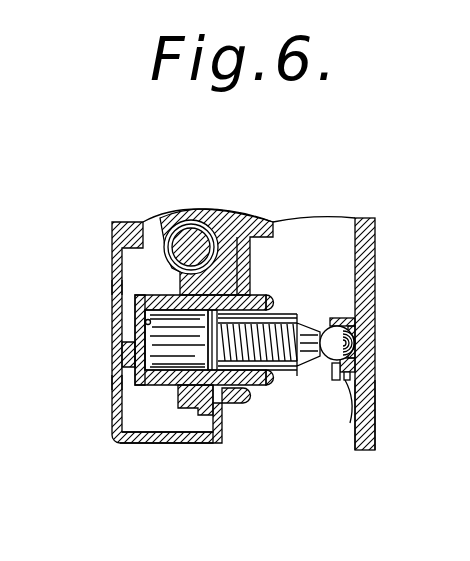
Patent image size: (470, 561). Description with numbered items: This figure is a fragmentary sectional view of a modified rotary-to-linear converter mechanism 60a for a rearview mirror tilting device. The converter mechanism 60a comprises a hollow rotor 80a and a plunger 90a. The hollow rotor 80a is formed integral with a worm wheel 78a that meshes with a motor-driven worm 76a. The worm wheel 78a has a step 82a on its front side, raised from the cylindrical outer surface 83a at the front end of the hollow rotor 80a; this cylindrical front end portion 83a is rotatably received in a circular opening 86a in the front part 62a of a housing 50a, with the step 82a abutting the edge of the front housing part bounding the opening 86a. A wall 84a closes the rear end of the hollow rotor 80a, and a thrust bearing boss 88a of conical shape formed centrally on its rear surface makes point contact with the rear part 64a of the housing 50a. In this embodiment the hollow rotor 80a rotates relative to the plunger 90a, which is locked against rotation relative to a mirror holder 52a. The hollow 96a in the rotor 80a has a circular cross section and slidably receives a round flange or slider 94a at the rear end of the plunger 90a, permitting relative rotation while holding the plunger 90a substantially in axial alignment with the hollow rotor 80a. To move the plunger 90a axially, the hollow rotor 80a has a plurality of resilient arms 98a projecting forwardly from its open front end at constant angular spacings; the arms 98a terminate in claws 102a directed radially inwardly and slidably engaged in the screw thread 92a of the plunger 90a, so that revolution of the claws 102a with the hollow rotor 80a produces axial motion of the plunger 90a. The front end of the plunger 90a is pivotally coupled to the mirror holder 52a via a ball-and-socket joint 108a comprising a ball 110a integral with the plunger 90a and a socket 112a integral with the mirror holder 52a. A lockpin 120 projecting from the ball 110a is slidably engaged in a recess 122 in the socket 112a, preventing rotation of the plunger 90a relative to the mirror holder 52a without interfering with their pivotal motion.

The housing 50a is at (112, 451).
The mirror holder 52a is at (375, 319).
The converter mechanism 60a is at (146, 394).
The front part of housing 62a is at (185, 444).
The rear part of housing 64a is at (110, 382).
The worm 76a is at (192, 247).
The worm wheel 78a is at (138, 441).
The hollow rotor 80a is at (110, 285).
The step 82a is at (243, 221).
The cylindrical outer surface 83a is at (252, 268).
The wall 84a is at (110, 288).
The circular opening 86a is at (250, 396).
The thrust bearing boss 88a is at (110, 353).
The plunger 90a is at (302, 376).
The screw thread 92a is at (300, 322).
The flange 94a is at (212, 342).
The hollow 96a is at (110, 313).
The resilient arms 98a is at (250, 298).
The claws 102a is at (273, 316).
The ball-and-socket joint 108a is at (327, 376).
The ball 110a is at (375, 367).
The socket 112a is at (375, 342).
The lockpin 120 is at (375, 408).
The recess 122 is at (375, 386).